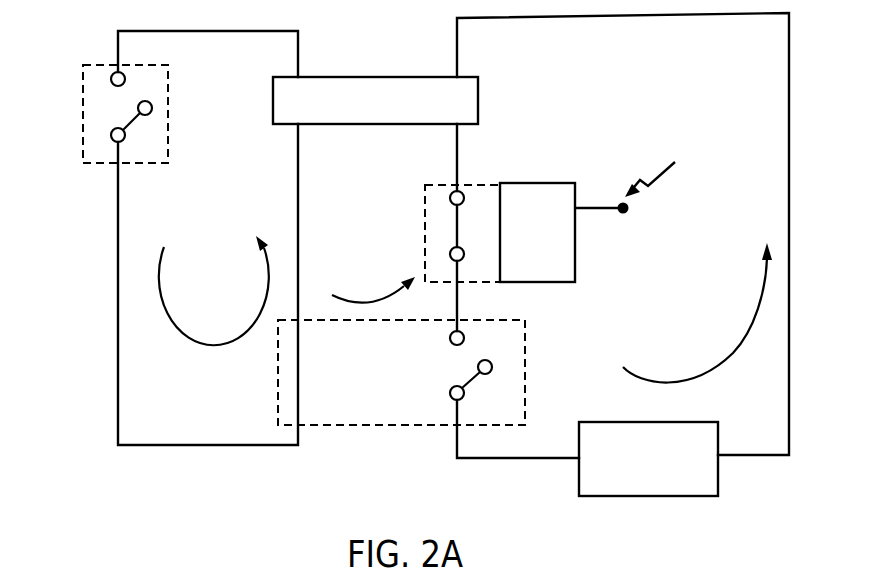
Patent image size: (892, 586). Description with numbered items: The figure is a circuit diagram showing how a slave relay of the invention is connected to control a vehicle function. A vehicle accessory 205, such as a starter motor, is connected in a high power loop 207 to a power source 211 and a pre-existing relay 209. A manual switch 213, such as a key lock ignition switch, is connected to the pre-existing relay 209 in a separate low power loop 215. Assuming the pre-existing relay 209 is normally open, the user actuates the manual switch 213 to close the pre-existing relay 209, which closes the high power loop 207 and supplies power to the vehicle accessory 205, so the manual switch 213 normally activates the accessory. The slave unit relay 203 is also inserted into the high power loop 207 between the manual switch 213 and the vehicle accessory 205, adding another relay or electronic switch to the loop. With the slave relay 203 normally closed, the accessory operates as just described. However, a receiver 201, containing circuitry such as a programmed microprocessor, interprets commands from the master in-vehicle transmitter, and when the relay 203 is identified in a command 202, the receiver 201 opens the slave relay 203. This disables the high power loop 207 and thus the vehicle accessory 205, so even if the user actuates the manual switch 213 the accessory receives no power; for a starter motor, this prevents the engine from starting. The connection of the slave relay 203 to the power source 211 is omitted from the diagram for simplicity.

The receiver 201 is at (548, 183).
The command 202 is at (663, 170).
The slave relay 203 is at (490, 183).
The vehicle accessory 205 is at (597, 497).
The high power loop 207 is at (760, 313).
The pre-existing relay 209 is at (407, 427).
The power source 211 is at (378, 77).
The manual switch 213 is at (157, 165).
The low power loop 215 is at (197, 362).